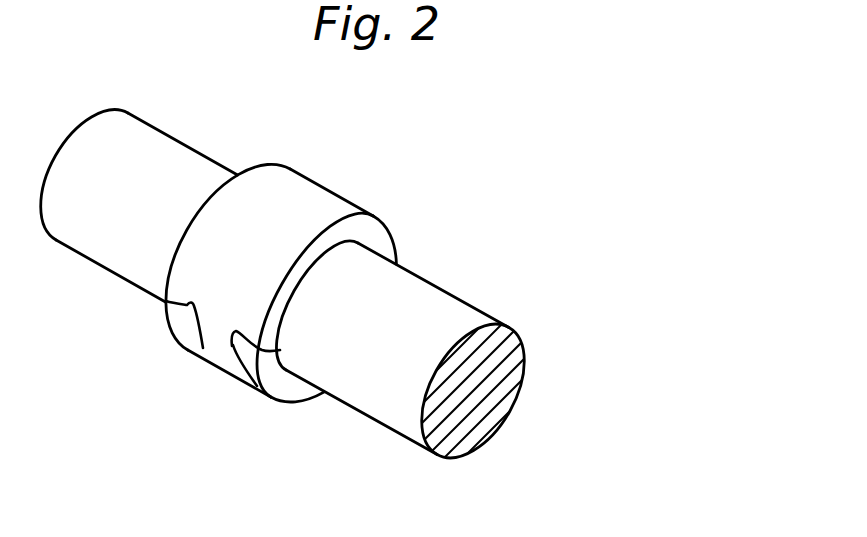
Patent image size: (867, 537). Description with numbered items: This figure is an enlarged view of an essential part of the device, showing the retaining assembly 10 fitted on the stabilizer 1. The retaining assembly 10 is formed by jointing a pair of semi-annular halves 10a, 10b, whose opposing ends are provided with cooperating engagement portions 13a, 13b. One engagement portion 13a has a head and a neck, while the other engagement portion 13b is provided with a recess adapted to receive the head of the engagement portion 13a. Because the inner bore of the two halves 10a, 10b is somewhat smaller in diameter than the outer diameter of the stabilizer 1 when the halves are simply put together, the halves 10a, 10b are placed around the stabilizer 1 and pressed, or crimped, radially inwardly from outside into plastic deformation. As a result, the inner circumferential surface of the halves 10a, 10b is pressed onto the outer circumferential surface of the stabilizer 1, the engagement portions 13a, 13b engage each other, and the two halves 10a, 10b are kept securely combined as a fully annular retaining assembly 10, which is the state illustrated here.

The stabilizer 1 is at (458, 302).
The retaining assembly 10 is at (267, 288).
The semi-annular half 10a is at (339, 207).
The semi-annular half 10b is at (307, 393).
The engagement portion 13a is at (206, 330).
The engagement portion 13b is at (256, 376).